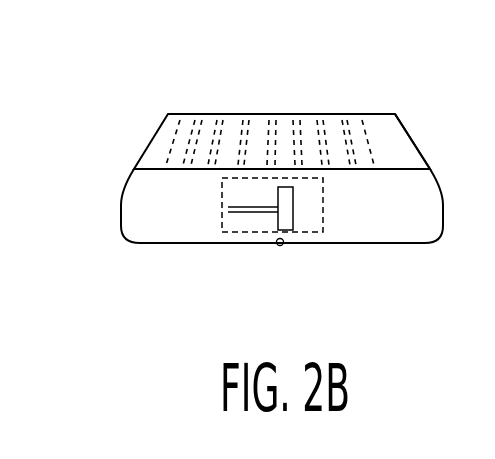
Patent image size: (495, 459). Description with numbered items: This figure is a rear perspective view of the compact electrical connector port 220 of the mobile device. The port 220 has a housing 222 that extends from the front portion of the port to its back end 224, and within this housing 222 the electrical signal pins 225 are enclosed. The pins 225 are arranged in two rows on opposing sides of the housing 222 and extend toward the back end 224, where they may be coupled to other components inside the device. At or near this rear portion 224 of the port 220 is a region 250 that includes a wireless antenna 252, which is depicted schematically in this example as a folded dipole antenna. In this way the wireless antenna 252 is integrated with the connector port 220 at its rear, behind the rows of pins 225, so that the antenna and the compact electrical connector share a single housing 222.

The port 220 is at (138, 138).
The housing 222 is at (418, 145).
The back end 224 is at (110, 208).
The pins 225 is at (285, 89).
The region 250 is at (222, 224).
The wireless antenna 252 is at (290, 235).